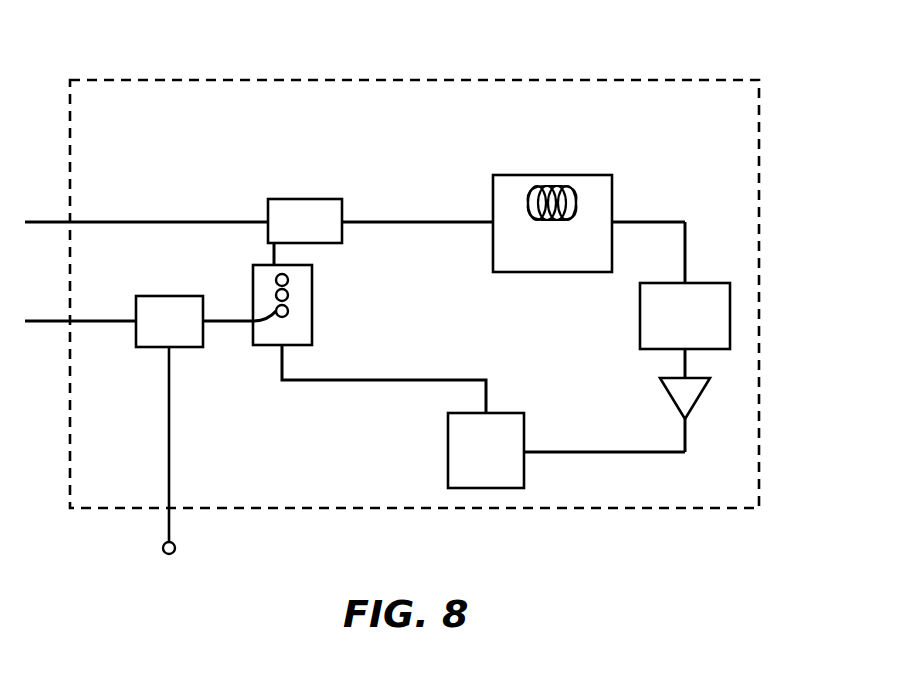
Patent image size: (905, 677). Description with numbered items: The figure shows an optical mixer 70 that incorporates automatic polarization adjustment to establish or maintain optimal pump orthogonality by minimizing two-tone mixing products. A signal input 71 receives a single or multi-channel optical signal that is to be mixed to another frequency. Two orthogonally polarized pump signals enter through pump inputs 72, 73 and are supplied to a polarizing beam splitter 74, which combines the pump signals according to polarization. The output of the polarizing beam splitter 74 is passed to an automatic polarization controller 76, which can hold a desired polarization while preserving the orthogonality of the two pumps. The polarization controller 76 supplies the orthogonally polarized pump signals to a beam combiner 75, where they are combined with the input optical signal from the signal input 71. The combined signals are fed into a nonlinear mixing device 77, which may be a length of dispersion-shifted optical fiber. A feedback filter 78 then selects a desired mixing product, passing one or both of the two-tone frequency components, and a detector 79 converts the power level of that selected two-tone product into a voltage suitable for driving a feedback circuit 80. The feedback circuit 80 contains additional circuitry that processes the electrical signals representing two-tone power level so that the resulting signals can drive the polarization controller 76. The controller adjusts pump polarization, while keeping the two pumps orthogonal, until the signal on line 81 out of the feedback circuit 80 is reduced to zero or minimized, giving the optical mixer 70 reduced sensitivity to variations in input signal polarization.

The optical mixer 70 is at (412, 86).
The signal input 71 is at (169, 216).
The pump input 72 is at (105, 318).
The pump input 73 is at (170, 440).
The polarizing beam splitter 74 is at (150, 348).
The beam combiner 75 is at (310, 199).
The automatic polarization controller 76 is at (313, 308).
The nonlinear mixing device 77 is at (558, 175).
The feedback filter 78 is at (640, 314).
The detector 79 is at (668, 396).
The feedback circuit 80 is at (448, 448).
The line 81 is at (331, 384).